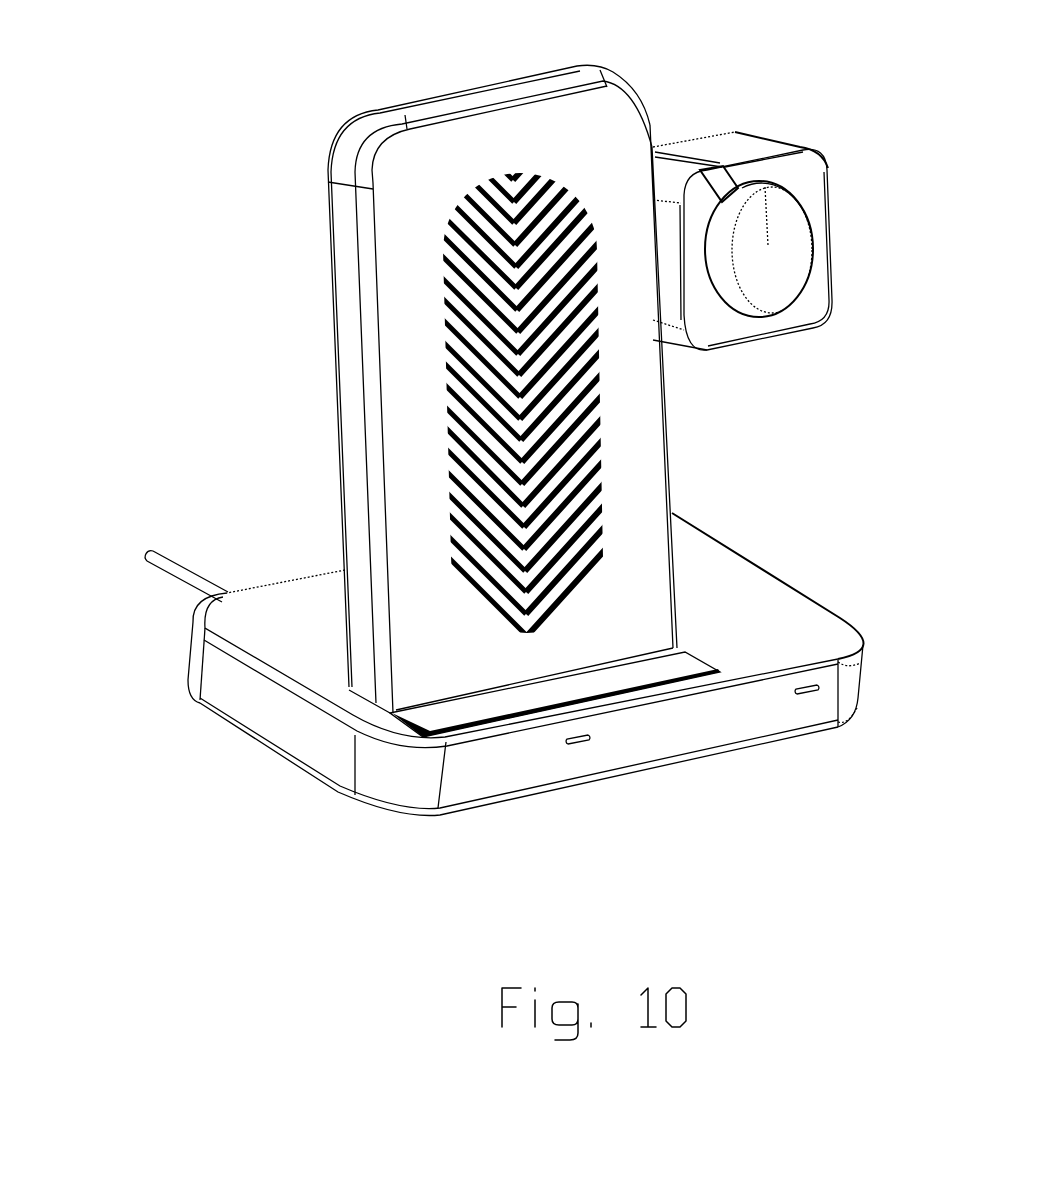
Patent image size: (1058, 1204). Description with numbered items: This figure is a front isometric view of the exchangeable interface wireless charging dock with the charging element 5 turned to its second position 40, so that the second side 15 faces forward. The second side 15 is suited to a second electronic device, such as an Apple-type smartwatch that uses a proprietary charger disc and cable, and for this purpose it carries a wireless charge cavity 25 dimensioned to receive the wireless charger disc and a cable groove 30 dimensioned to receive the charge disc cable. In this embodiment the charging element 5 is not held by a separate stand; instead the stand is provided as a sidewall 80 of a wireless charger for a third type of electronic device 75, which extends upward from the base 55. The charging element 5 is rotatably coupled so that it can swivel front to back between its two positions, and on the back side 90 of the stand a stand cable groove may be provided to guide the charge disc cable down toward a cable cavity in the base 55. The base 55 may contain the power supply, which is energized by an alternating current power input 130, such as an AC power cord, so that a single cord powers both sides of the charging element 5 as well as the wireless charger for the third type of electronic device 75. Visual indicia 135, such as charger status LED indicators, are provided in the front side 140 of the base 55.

The charging element 5 is at (796, 209).
The second side 15 is at (796, 240).
The second position 40 is at (805, 177).
The wireless charge cavity 25 is at (750, 257).
The cable groove 30 is at (722, 167).
The base 55 is at (783, 629).
The wireless charger for a third type of electronic device 75 is at (410, 242).
The sidewall 80 is at (655, 147).
The back side 90 is at (300, 523).
The alternating current power input 130 is at (202, 588).
The visual indicia 135 is at (578, 742).
The front side 140 is at (573, 689).